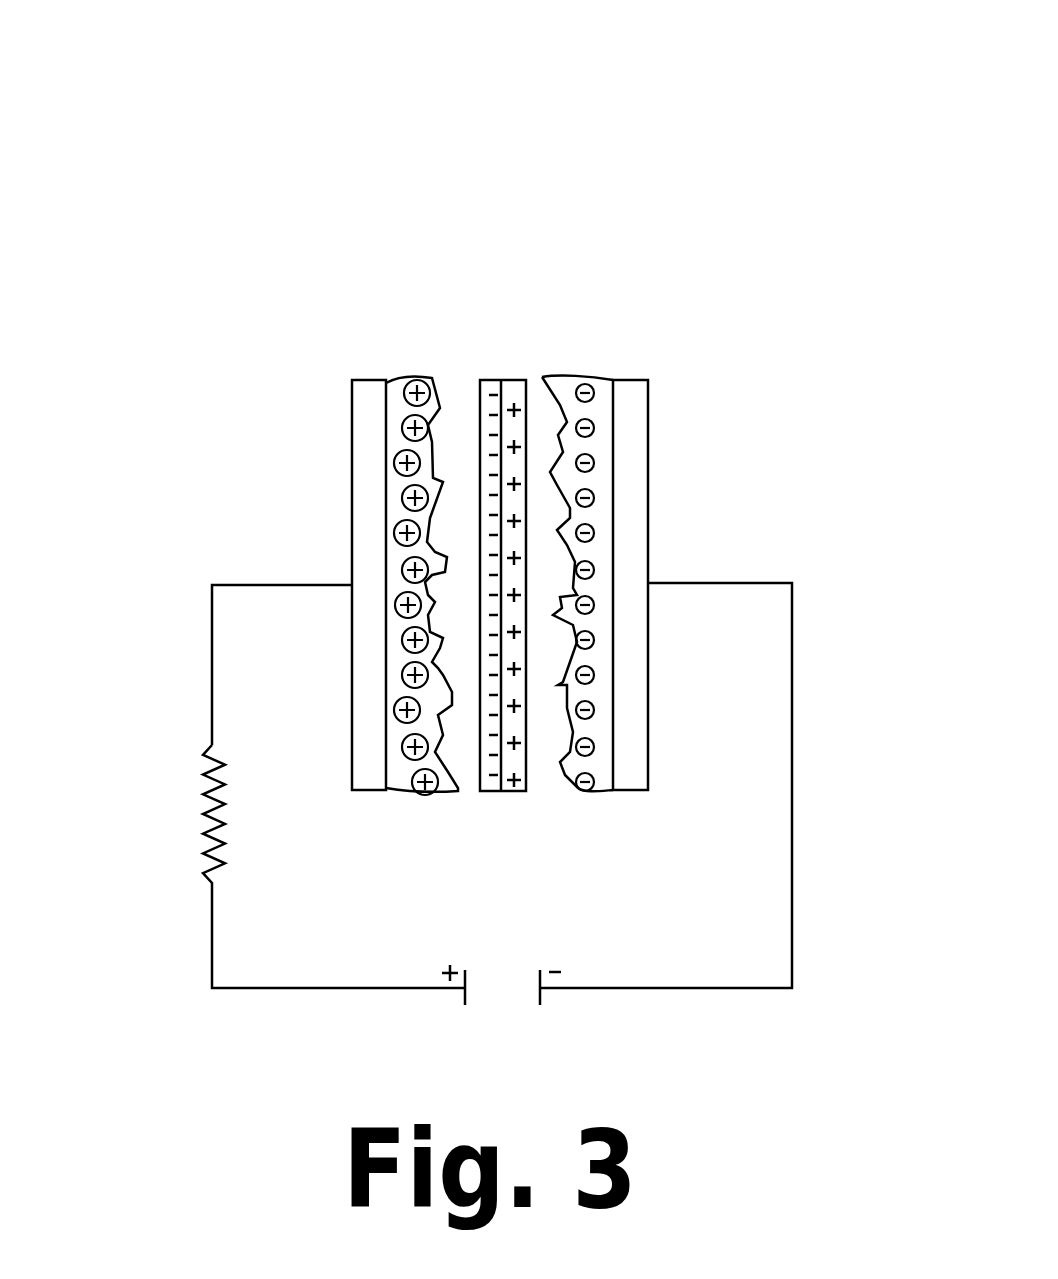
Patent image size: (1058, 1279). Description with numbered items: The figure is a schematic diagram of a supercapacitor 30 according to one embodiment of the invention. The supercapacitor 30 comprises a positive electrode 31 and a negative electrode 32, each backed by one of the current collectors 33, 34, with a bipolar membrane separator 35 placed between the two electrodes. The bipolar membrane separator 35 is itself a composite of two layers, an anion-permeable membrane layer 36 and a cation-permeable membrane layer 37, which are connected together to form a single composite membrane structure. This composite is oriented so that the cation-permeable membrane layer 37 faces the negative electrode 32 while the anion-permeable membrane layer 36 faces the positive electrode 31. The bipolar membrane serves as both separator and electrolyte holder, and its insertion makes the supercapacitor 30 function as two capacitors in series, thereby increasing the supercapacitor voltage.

The supercapacitor 30 is at (733, 283).
The positive electrode 31 is at (441, 380).
The negative electrode 32 is at (555, 370).
The current collector 33 is at (352, 432).
The current collector 34 is at (648, 422).
The bipolar membrane separator 35 is at (500, 378).
The anion-permeable membrane layer 36 is at (480, 683).
The cation-permeable membrane layer 37 is at (526, 686).